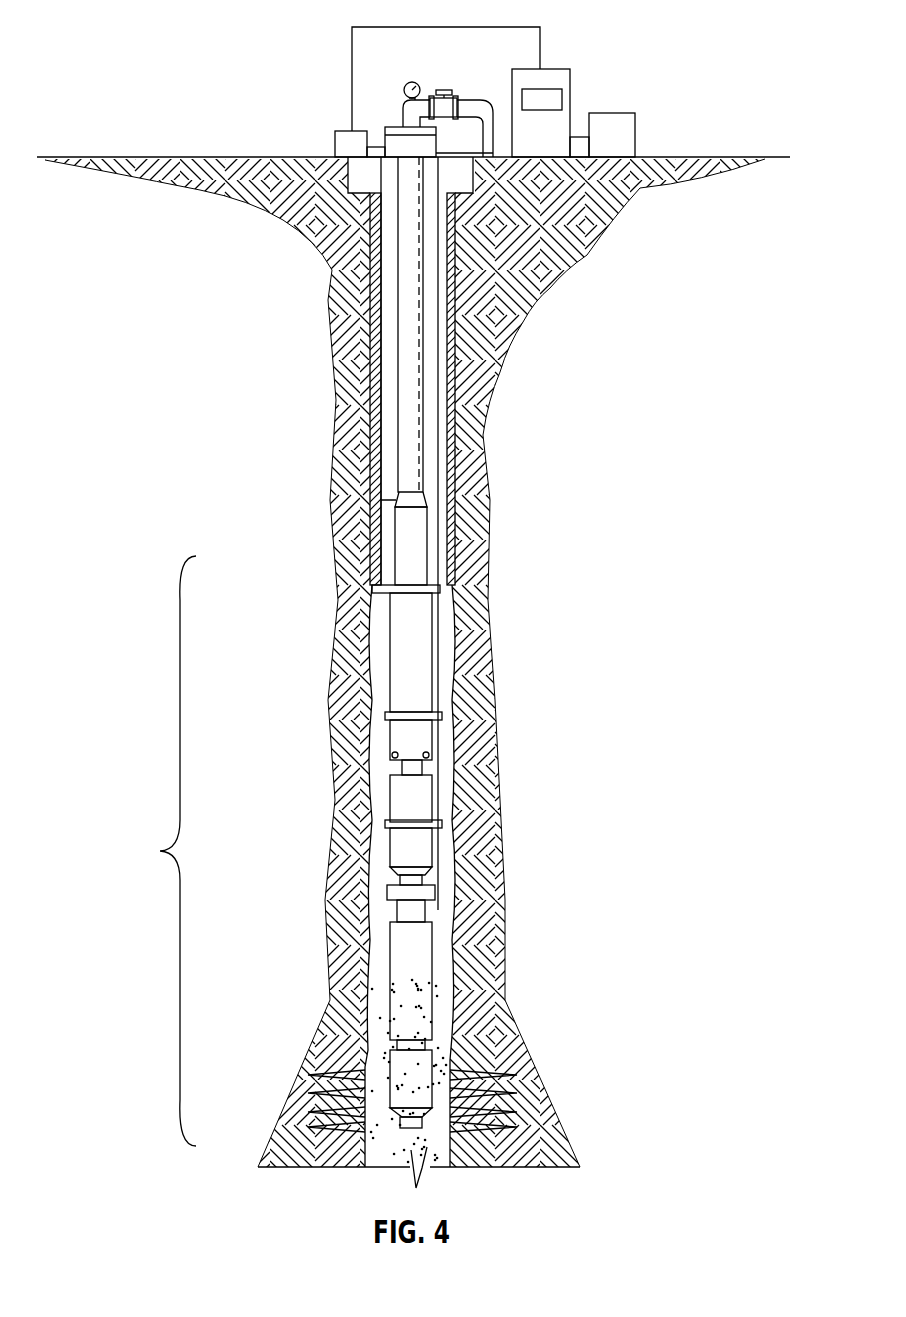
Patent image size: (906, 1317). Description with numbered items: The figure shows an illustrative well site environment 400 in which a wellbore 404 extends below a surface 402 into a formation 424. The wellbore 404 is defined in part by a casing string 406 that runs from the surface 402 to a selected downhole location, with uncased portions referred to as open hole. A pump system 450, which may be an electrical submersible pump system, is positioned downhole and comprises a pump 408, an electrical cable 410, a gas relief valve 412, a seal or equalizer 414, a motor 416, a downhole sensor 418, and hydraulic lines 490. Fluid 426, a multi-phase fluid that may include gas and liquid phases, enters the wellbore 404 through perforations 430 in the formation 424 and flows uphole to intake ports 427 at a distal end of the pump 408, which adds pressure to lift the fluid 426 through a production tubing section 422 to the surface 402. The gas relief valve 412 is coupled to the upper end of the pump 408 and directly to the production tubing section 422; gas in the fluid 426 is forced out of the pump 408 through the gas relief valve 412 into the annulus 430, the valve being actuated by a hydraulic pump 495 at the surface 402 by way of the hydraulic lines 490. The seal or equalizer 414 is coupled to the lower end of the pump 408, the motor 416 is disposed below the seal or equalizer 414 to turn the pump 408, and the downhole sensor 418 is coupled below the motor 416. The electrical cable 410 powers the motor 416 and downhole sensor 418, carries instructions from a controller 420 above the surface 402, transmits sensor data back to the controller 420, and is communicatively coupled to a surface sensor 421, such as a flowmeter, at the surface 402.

The well site environment 400 is at (106, 46).
The surface 402 is at (693, 157).
The wellbore 404 is at (450, 415).
The casing string 406 is at (372, 455).
The pump 408 is at (388, 668).
The electrical cable 410 is at (587, 208).
The gas relief valve 412 is at (388, 527).
The seal or equalizer 414 is at (390, 793).
The motor 416 is at (390, 975).
The downhole sensor 418 is at (397, 1065).
The controller 420 is at (550, 69).
The surface sensor 421 is at (608, 113).
The production tubing section 422 is at (405, 318).
The formation 424 is at (525, 256).
The fluid 426 is at (449, 1060).
The intake ports 427 is at (393, 750).
The perforations 430 is at (388, 385).
The pump system 450 is at (153, 851).
The hydraulic lines 490 is at (348, 222).
The hydraulic pump 495 is at (338, 131).